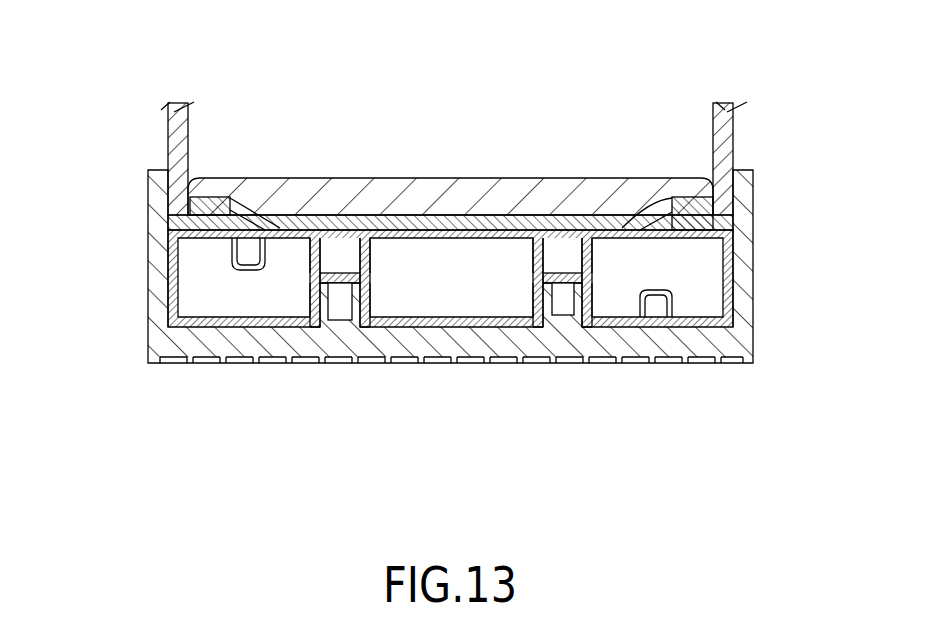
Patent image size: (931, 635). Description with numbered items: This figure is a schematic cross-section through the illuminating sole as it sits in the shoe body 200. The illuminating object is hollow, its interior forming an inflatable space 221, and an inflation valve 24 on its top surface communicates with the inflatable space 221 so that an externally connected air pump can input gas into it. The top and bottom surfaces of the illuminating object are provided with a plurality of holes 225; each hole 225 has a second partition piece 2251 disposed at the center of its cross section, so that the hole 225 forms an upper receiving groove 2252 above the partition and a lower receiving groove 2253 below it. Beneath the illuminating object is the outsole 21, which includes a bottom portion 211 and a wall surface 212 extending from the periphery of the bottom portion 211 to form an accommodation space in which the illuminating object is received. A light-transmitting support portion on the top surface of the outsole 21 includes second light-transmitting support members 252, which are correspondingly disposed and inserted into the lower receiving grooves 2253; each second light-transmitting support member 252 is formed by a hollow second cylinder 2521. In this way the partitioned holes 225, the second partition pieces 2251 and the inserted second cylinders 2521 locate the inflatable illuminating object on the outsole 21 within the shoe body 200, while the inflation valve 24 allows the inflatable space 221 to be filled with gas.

The shoe body 200 is at (167, 128).
The outsole 21 is at (388, 280).
The bottom portion 211 is at (193, 345).
The wall surface 212 is at (148, 295).
The inflatable space 221 is at (437, 273).
The hole 225 is at (539, 285).
The second partition piece 2251 is at (381, 280).
The upper receiving groove 2252 is at (337, 247).
The lower receiving groove 2253 is at (307, 300).
The inflation valve 24 is at (243, 262).
The second light-transmitting support member 252 is at (451, 398).
The second cylinder 2521 is at (540, 448).